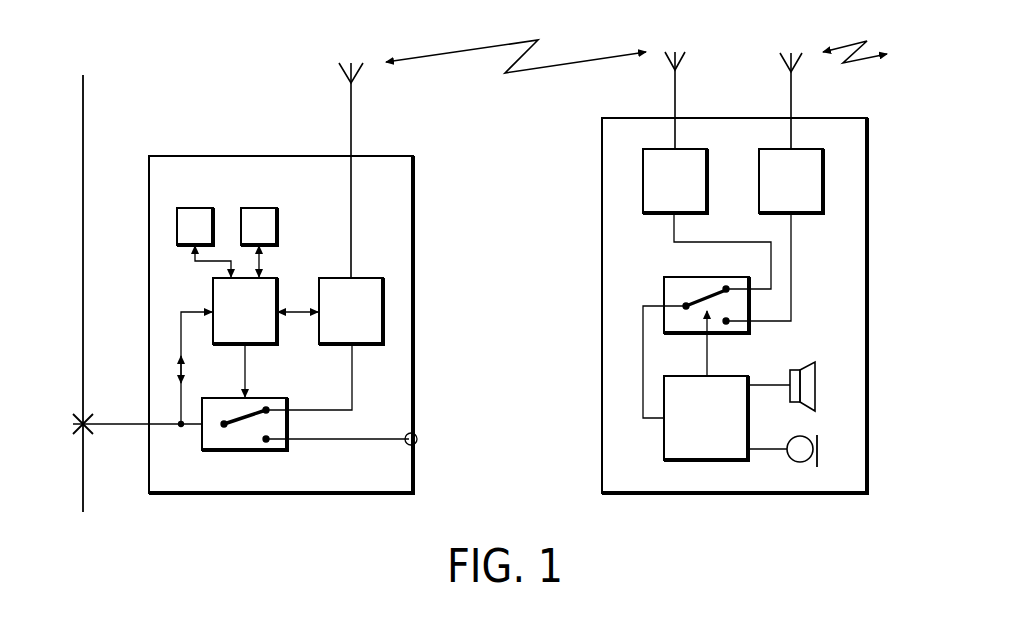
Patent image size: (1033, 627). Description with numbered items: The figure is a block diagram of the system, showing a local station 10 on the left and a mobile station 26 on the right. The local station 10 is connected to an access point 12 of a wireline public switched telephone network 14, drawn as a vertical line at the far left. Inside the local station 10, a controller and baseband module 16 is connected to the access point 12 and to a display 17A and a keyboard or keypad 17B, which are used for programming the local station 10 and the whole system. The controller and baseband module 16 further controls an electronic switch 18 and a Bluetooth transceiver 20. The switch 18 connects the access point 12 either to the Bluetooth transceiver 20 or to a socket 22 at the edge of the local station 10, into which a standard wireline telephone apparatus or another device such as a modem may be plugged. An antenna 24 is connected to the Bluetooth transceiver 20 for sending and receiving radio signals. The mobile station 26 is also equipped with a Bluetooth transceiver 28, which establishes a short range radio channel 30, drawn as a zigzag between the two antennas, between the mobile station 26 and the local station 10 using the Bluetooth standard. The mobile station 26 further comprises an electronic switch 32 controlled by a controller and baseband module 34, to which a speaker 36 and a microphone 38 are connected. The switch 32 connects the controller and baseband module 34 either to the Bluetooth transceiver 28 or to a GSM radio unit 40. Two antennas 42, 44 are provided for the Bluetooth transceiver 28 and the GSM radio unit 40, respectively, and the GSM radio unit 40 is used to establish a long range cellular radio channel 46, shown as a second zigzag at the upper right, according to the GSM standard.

The local station 10 is at (340, 498).
The access point 12 is at (73, 424).
The wireline public switched telephone network 14 is at (90, 105).
The controller and baseband module 16 is at (268, 346).
The display 17A is at (195, 207).
The keyboard or keypad 17B is at (259, 207).
The electronic switch 18 is at (222, 452).
The Bluetooth transceiver 20 is at (366, 346).
The socket 22 is at (417, 440).
The antenna 24 is at (350, 111).
The mobile station 26 is at (600, 461).
The Bluetooth transceiver 28 is at (655, 214).
The short range radio channel 30 is at (507, 75).
The electronic switch 32 is at (663, 285).
The controller and baseband module 34 is at (664, 447).
The speaker 36 is at (817, 369).
The microphone 38 is at (820, 457).
The GSM radio unit 40 is at (812, 214).
The antenna 42 is at (674, 93).
The antenna 44 is at (789, 93).
The long range cellular radio channel 46 is at (849, 65).